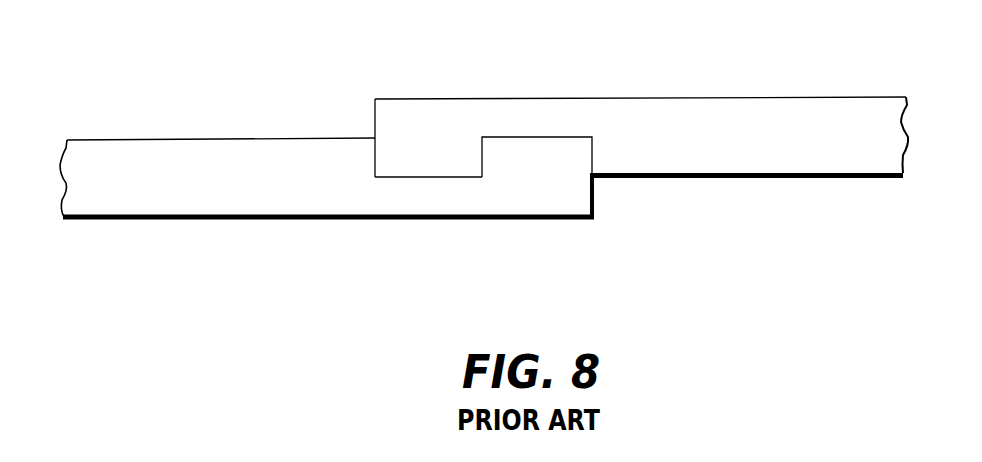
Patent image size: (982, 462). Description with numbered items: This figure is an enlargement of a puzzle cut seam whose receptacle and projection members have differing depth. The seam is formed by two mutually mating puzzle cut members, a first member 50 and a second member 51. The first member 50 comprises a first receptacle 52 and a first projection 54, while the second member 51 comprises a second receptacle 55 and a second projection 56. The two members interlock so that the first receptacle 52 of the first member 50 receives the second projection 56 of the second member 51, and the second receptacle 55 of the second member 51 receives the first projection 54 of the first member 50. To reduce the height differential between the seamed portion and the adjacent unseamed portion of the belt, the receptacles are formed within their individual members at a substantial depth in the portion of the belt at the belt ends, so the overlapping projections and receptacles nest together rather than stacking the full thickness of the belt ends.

The first member 50 is at (767, 137).
The second member 51 is at (212, 177).
The first receptacle 52 is at (547, 137).
The first projection 54 is at (415, 140).
The second receptacle 55 is at (433, 178).
The second projection 56 is at (593, 193).